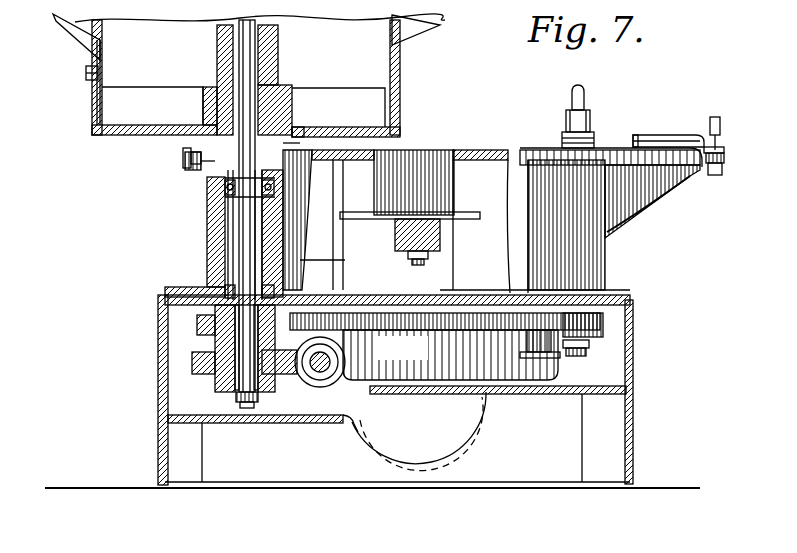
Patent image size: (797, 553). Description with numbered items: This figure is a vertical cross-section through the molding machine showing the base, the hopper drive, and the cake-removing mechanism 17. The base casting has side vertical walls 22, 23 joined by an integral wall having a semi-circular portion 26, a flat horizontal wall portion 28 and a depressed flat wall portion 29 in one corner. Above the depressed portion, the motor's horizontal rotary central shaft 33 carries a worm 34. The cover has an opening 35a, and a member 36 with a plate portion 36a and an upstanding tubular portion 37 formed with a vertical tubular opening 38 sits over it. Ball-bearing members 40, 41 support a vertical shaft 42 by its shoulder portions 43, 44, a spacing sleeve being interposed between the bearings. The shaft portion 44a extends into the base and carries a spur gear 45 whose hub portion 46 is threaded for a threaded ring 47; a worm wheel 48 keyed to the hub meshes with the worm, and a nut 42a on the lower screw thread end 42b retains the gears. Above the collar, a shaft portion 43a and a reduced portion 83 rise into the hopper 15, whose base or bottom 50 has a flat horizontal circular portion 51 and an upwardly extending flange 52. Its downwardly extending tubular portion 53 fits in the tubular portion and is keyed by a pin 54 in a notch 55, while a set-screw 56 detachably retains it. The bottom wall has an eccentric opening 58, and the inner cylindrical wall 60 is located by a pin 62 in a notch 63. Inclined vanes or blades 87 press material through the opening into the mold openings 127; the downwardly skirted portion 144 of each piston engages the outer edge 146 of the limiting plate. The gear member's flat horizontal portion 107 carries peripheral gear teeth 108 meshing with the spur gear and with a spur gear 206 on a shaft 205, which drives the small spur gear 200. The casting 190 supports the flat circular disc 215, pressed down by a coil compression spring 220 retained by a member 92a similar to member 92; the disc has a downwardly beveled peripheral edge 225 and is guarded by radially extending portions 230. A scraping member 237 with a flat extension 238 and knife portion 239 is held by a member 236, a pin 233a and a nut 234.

The hopper 15 is at (460, 20).
The mechanism for removing the molded cakes 17 is at (697, 100).
The side vertical wall 22 is at (158, 444).
The side vertical wall 23 is at (634, 446).
The semi-circular wall portion 26 is at (352, 448).
The flat horizontal wall portion 28 is at (530, 394).
The depressed flat horizontal wall portion 29 is at (252, 404).
The rotary central shaft 33 is at (330, 370).
The worm 34 is at (305, 380).
The opening 35a is at (168, 303).
The member 36 is at (205, 206).
The plate portion 36a is at (178, 287).
The upstanding tubular portion 37 is at (209, 232).
The vertical tubular opening 38 is at (305, 186).
The ball-bearing member 40 is at (220, 190).
The ball-bearing member 41 is at (290, 262).
The vertical shaft 42 is at (243, 238).
The nut 42a is at (262, 405).
The lower screw thread end 42b is at (243, 408).
The shoulder portion 43 is at (185, 170).
The shaft portion 43a is at (258, 140).
The shoulder portion 44 is at (247, 287).
The shaft portion 44a is at (235, 335).
The spur gear 45 is at (197, 323).
The hub portion 46 is at (205, 370).
The threaded ring 47 is at (215, 385).
The worm wheel 48 is at (192, 360).
The base or bottom 50 is at (103, 140).
The flat horizontal circular portion 51 is at (128, 135).
The upwardly extending flange 52 is at (93, 104).
The downwardly extending tubular portion 53 is at (267, 157).
The pin 54 is at (283, 143).
The notch 55 is at (285, 163).
The set-screw 56 is at (187, 148).
The eccentric opening 58 is at (353, 137).
The inner cylindrical wall 60 is at (101, 44).
The pin 62 is at (86, 74).
The notch 63 is at (90, 57).
The reduced portion 83 is at (243, 50).
The inclined vanes or blades 87 is at (150, 100).
The member 92 is at (588, 116).
The member 92a is at (585, 92).
The flat horizontal portion 107 is at (500, 334).
The peripheral gear teeth 108 is at (400, 330).
The mold opening 127 is at (422, 160).
The downwardly skirted portion 144 is at (470, 200).
The outer edge 146 is at (484, 222).
The casting 190 is at (666, 204).
The small spur gear 200 is at (602, 328).
The shaft 205 is at (548, 350).
The spur gear 206 is at (527, 345).
The flat circular disc 215 is at (497, 150).
The coil compression spring 220 is at (565, 140).
The downwardly beveled peripheral edge 225 is at (458, 150).
The radially extending portions 230 is at (633, 208).
The pin 233a is at (722, 146).
The nut 234 is at (723, 172).
The member 236 is at (720, 118).
The scraping member 237 is at (676, 134).
The flat extension 238 is at (725, 156).
The knife portion 239 is at (644, 135).